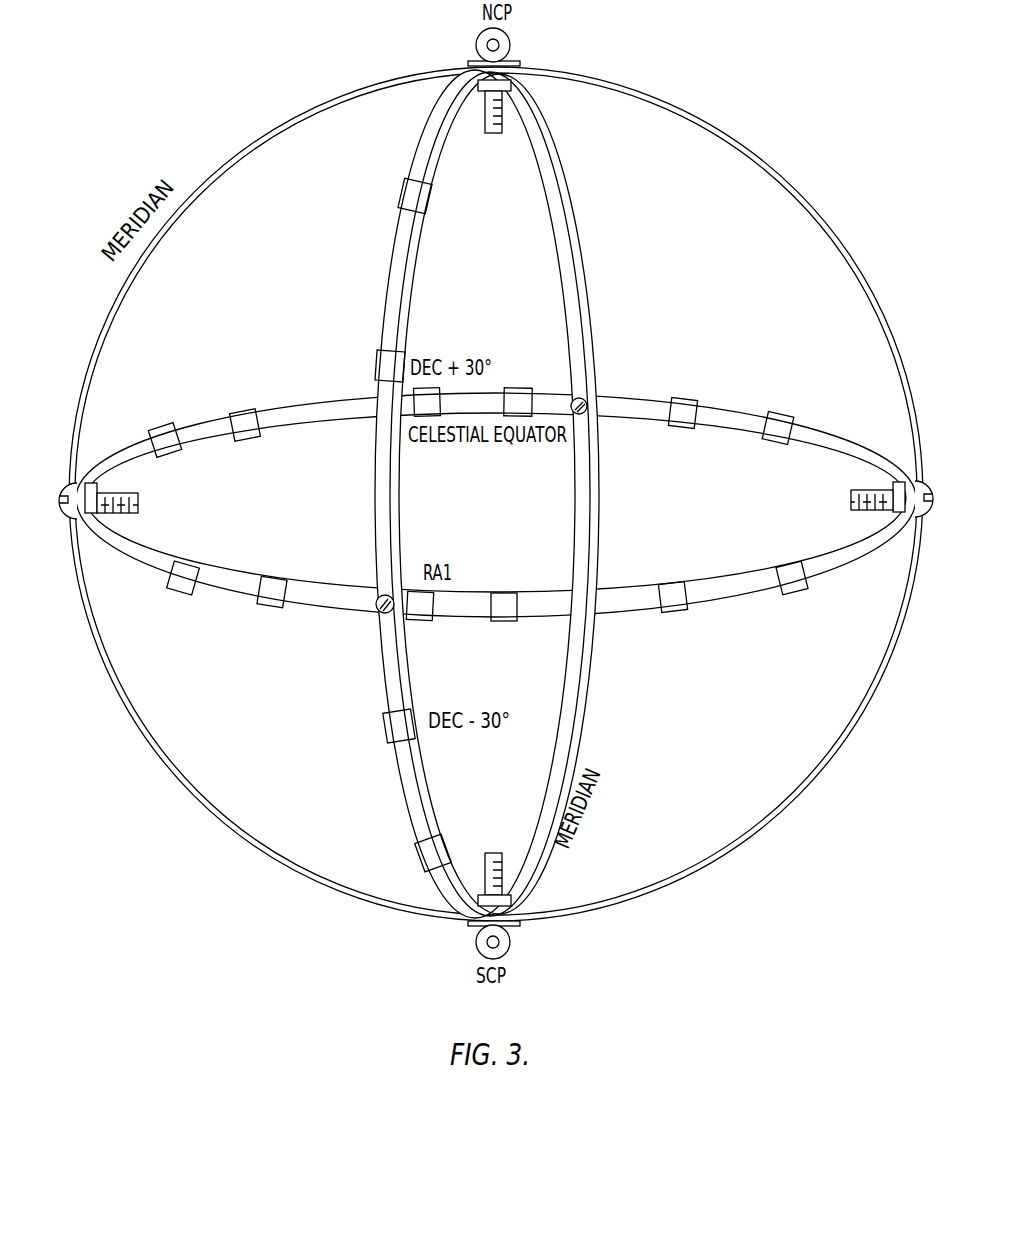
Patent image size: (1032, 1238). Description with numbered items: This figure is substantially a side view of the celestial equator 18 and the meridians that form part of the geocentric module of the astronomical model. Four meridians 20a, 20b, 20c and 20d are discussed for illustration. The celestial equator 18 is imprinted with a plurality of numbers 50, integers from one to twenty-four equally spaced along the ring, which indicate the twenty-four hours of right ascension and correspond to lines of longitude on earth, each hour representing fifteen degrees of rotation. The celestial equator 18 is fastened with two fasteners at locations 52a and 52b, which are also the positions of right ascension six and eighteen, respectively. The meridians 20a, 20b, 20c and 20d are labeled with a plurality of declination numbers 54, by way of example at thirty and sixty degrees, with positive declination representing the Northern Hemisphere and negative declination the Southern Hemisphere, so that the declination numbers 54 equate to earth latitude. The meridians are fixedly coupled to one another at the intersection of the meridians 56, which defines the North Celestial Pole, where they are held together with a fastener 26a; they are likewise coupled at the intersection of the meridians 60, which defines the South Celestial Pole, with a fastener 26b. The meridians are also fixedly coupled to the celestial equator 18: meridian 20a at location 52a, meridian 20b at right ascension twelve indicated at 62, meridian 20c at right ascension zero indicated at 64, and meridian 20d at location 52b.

The celestial equator 18 is at (711, 598).
The meridian 20a is at (763, 163).
The meridian 20b is at (569, 217).
The meridian 20c is at (420, 152).
The meridian 20d is at (360, 88).
The fastener 26a is at (492, 100).
The fastener 26b is at (493, 850).
The plurality of numbers 50 is at (418, 622).
The location 52a is at (898, 452).
The location 52b is at (84, 480).
The declination numbers 54 is at (410, 340).
The intersection of the meridians 56 is at (518, 57).
The intersection of the meridians 60 is at (516, 927).
The right ascension 12 coupling location 62 is at (588, 413).
The right ascension 0 coupling location 64 is at (384, 596).